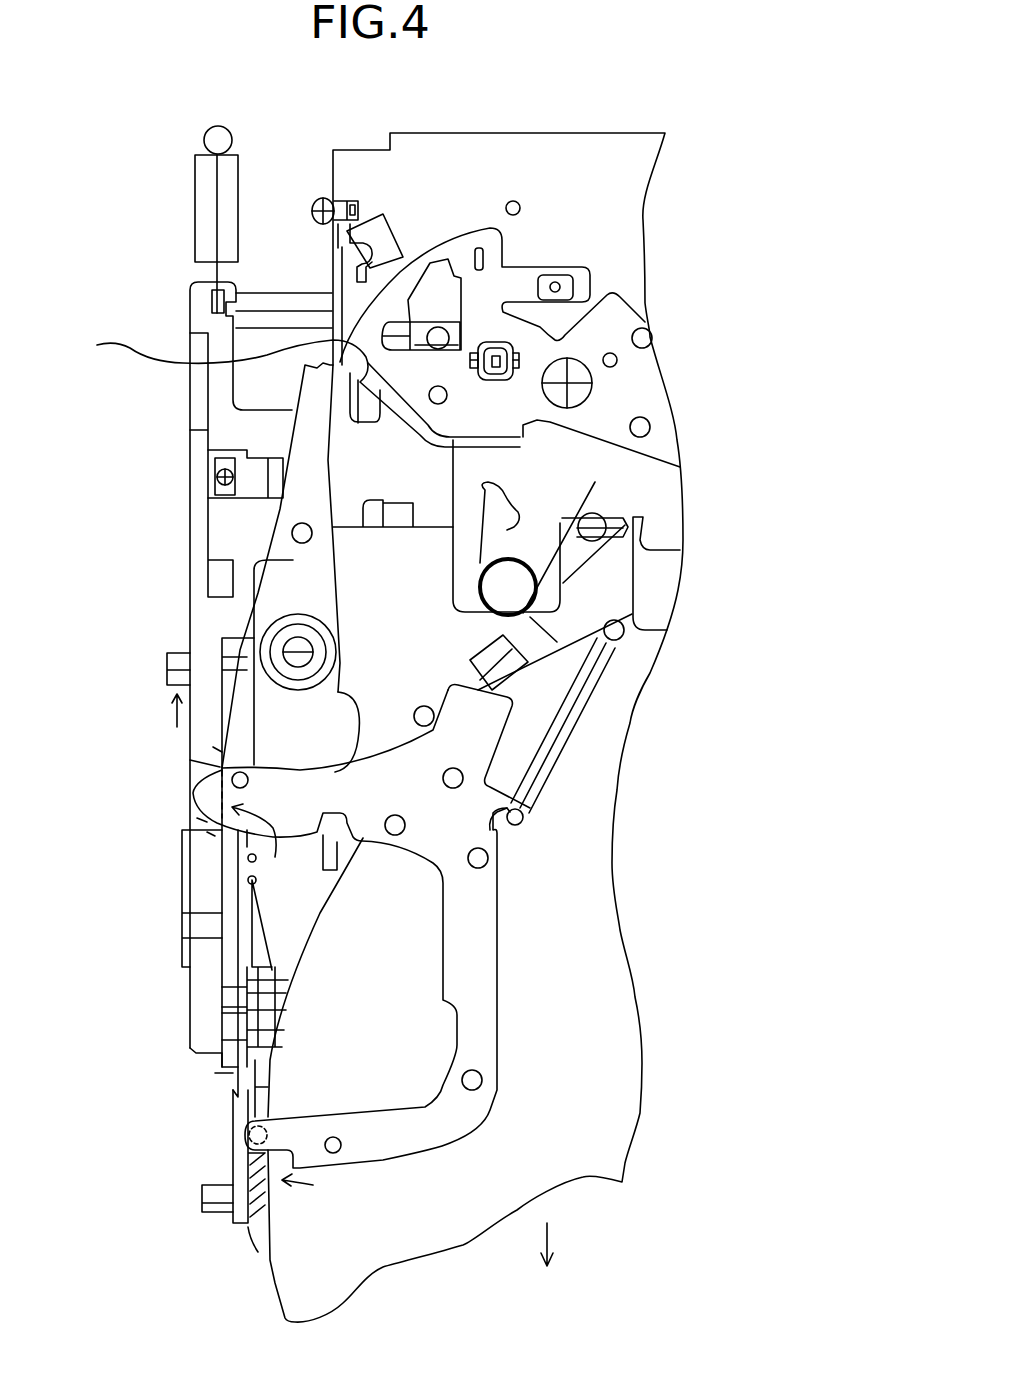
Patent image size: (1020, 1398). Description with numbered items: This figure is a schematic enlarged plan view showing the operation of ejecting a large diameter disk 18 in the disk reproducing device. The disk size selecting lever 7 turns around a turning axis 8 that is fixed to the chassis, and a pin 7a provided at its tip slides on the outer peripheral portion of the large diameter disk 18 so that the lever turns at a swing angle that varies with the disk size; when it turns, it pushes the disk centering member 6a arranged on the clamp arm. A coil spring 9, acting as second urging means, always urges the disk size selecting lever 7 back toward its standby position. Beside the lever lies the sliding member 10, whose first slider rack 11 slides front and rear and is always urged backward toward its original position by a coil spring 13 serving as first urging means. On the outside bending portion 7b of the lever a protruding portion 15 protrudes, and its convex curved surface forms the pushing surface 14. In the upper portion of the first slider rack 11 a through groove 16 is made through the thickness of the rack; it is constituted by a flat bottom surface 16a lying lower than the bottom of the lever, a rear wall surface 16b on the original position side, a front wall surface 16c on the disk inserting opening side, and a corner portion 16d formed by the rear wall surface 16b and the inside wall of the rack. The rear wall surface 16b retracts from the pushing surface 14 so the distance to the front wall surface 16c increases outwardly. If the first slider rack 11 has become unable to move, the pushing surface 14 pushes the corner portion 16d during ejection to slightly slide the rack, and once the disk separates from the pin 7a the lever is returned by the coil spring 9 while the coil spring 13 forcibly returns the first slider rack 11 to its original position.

The coil spring 13 is at (203, 225).
The disk centering member 6a is at (287, 387).
The first slider rack 11 is at (193, 569).
The sliding member 10 is at (206, 677).
The turning axis 8 is at (298, 656).
The disk size selecting lever 7 is at (382, 765).
The pin 7a is at (248, 1132).
The outside bending portion 7b is at (357, 730).
The coil spring 9 is at (555, 755).
The pushing surface 14 is at (197, 783).
The protruding portion 15 is at (193, 800).
The through groove 16 is at (173, 983).
The flat bottom surface 16a is at (197, 818).
The rear wall surface 16b is at (212, 763).
The front wall surface 16c is at (207, 832).
The corner portion 16d is at (217, 750).
The large diameter disk 18 is at (293, 1293).